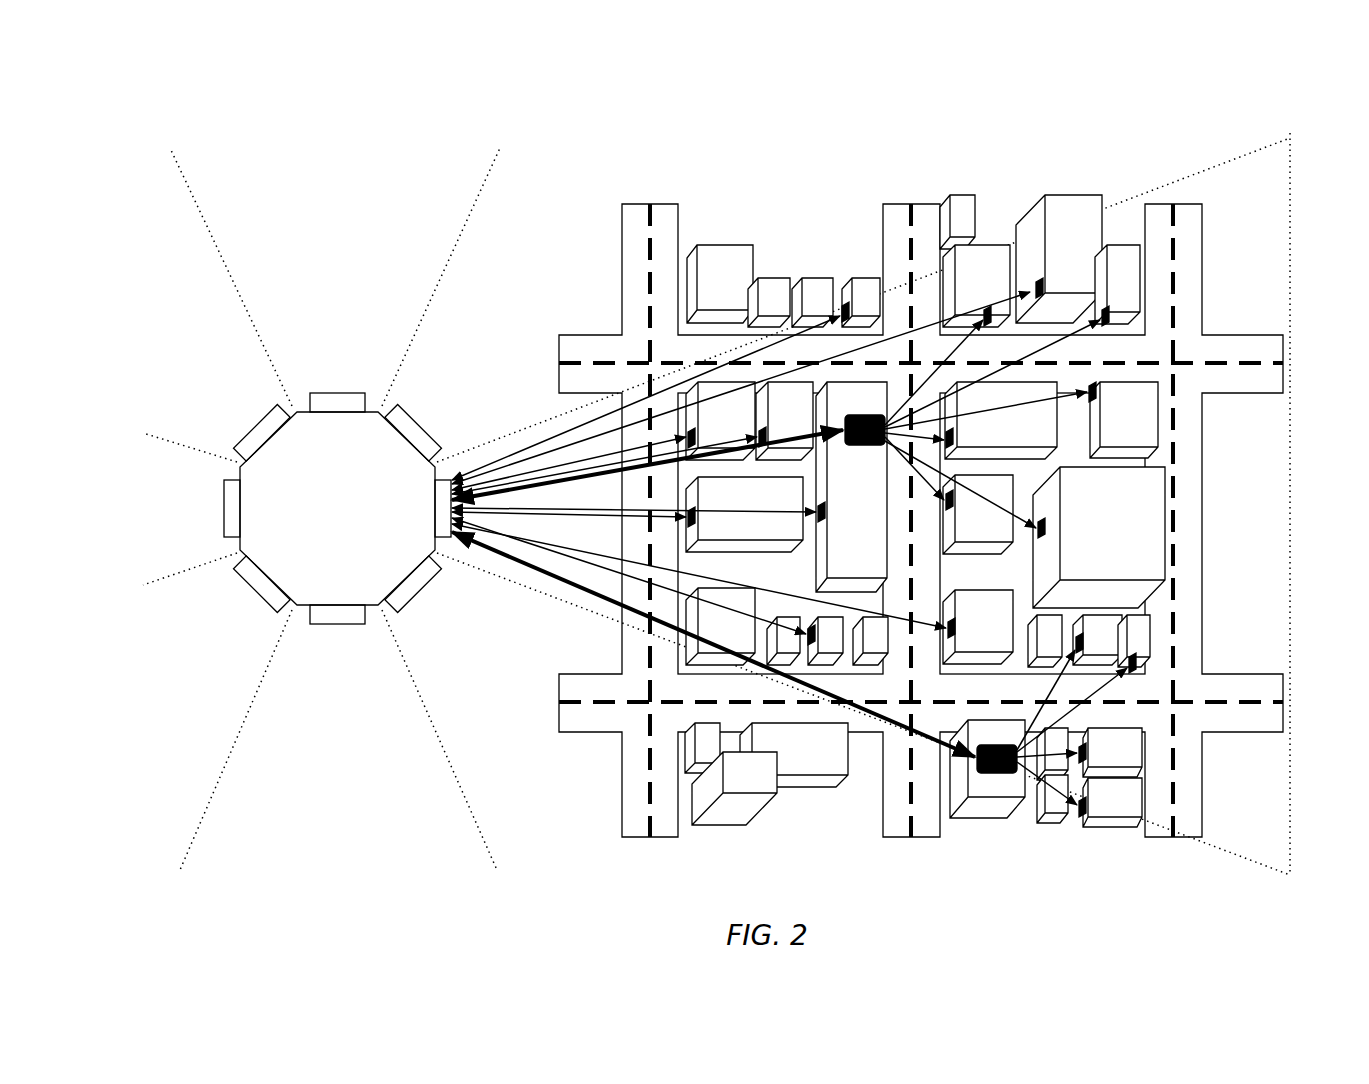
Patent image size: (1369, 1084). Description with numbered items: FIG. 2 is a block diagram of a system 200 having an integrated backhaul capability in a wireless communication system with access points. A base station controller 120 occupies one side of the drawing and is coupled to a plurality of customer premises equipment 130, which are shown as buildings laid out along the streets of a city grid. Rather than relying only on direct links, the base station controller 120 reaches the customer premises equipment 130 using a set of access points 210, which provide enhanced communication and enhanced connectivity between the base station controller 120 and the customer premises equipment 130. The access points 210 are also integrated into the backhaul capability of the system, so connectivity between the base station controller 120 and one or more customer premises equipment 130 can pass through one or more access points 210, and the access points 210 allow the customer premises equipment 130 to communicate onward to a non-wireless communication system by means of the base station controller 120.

The wireless communication system 200 is at (130, 124).
The base station controller 120 is at (435, 650).
The customer premises equipment 130 is at (1068, 198).
The access points 210 is at (984, 310).